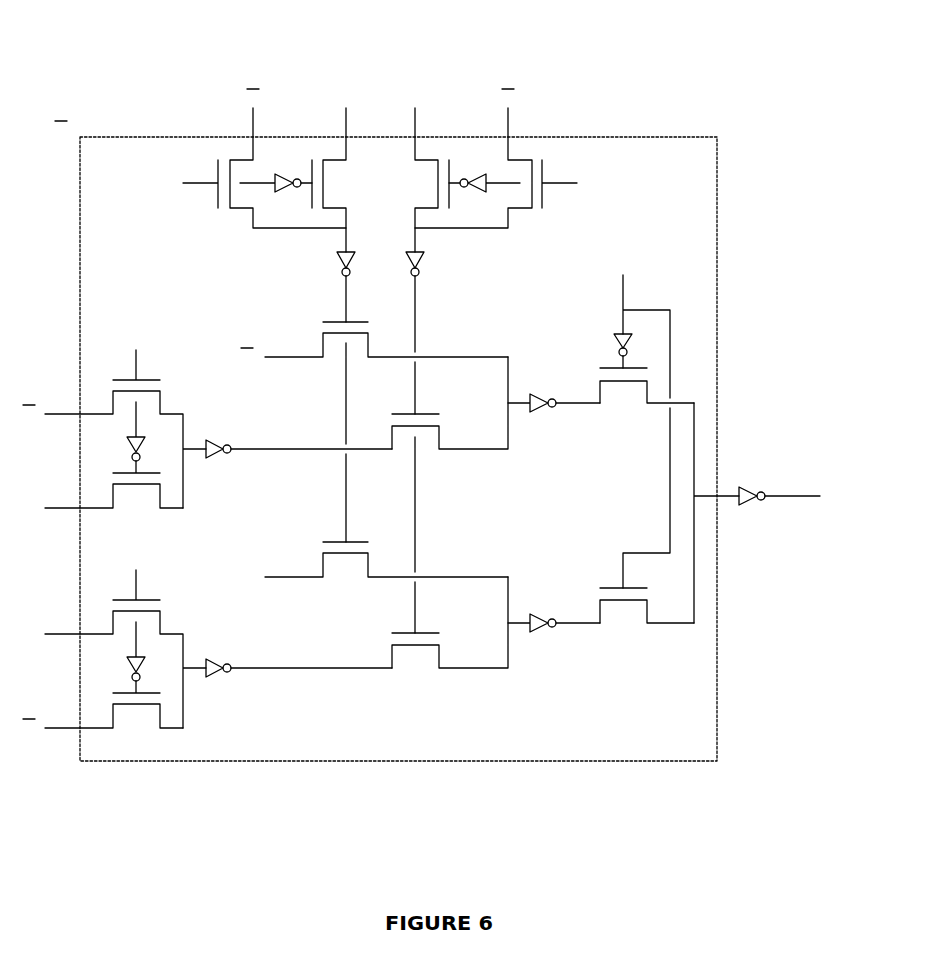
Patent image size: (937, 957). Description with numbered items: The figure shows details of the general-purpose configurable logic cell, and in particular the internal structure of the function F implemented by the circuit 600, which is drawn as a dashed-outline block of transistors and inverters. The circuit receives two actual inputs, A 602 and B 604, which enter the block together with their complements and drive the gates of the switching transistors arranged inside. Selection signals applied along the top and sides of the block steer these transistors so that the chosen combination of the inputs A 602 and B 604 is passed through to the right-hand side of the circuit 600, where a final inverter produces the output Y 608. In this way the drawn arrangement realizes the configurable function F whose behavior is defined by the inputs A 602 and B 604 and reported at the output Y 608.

The multiplexer circuit 600 is at (646, 126).
The input A 602 is at (251, 563).
The input B 604 is at (349, 82).
The output Y 608 is at (824, 480).